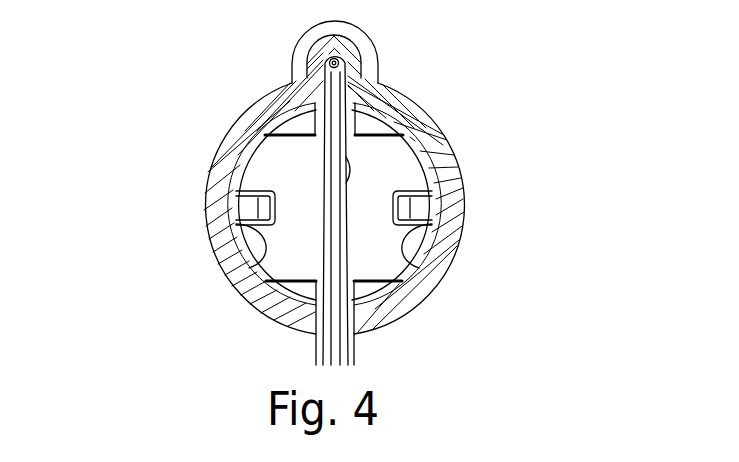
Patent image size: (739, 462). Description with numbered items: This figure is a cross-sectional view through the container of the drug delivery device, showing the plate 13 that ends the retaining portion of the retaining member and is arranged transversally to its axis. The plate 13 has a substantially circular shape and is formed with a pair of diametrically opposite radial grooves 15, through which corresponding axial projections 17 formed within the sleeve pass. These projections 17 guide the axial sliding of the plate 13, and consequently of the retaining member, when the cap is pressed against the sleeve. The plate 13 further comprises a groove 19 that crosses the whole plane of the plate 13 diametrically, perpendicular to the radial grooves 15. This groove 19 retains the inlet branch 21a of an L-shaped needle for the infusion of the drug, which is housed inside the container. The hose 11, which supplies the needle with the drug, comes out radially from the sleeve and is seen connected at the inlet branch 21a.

The hose 11 is at (353, 352).
The plate 13 is at (398, 172).
The radial grooves 15 is at (410, 268).
The axial projections 17 is at (418, 209).
The groove 19 is at (349, 164).
The inlet branch 21a is at (325, 212).